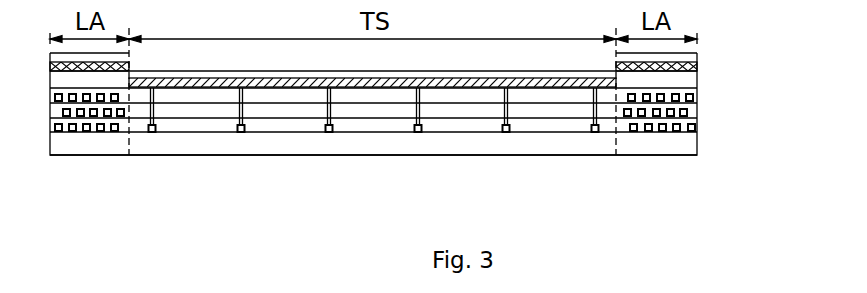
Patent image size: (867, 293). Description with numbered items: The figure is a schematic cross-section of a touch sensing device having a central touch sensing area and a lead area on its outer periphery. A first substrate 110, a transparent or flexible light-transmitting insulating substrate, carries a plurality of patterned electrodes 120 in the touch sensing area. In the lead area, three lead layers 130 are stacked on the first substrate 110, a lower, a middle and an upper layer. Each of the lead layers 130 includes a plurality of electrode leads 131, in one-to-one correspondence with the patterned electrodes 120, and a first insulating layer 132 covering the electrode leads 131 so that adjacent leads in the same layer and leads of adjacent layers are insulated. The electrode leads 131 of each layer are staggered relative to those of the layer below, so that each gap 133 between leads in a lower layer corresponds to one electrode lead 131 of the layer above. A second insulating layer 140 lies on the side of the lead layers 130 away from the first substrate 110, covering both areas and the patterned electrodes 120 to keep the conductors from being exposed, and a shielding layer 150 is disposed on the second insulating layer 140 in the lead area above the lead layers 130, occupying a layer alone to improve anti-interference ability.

The first substrate 110 is at (439, 146).
The patterned electrodes 120 is at (560, 85).
The lead layers 130 is at (451, 134).
The electrode leads 131 is at (693, 99).
The first insulating layer 132 is at (690, 93).
The gap 133 is at (668, 134).
The second insulating layer 140 is at (642, 80).
The shielding layer 150 is at (694, 61).